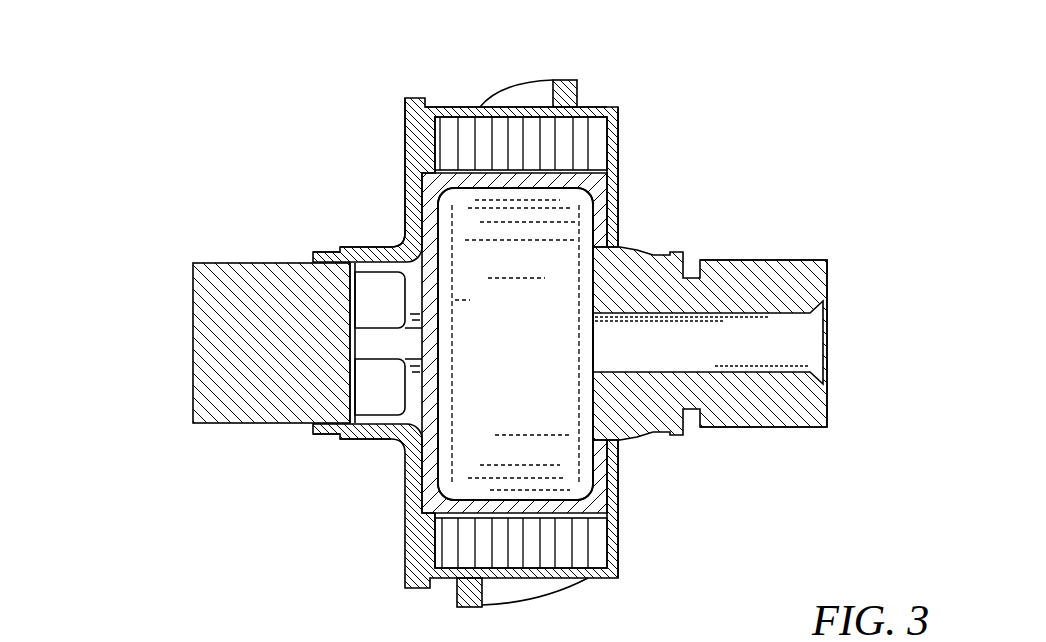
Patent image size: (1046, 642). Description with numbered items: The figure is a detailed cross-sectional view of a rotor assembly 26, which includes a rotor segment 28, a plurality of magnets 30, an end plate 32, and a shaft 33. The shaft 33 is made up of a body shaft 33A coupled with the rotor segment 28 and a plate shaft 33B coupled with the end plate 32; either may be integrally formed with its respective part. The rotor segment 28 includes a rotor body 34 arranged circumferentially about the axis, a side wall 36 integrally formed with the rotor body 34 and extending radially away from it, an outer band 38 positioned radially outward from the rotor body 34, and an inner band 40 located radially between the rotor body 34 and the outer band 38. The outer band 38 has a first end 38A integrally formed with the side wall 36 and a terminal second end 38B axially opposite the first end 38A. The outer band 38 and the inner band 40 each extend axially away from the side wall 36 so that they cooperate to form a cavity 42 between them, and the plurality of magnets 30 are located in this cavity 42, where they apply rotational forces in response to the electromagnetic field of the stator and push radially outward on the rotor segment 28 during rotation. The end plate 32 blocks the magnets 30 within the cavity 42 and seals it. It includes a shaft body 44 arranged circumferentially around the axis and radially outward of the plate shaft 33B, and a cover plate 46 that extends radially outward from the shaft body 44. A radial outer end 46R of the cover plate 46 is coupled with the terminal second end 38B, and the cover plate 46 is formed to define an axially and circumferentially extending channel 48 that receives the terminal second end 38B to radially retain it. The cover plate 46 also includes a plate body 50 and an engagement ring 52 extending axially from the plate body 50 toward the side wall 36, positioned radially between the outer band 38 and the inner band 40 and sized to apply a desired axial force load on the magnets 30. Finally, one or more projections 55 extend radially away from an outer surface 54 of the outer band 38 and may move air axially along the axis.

The rotor assembly 26 is at (115, 123).
The rotor segment 28 is at (502, 299).
The plurality of magnets 30 is at (553, 137).
The end plate 32 is at (327, 158).
The shaft 33 is at (486, 299).
The body shaft 33A is at (743, 258).
The plate shaft 33B is at (240, 263).
The rotor body 34 is at (642, 240).
The side wall 36 is at (623, 177).
The outer band 38 is at (499, 299).
The first end 38A is at (600, 107).
The terminal second end 38B is at (425, 100).
The inner band 40 is at (598, 485).
The cavity 42 is at (448, 143).
The shaft body 44 is at (328, 253).
The cover plate 46 is at (380, 220).
The radial outer end 46R is at (402, 117).
The channel 48 is at (423, 140).
The plate body 50 is at (413, 500).
The engagement ring 52 is at (430, 548).
The outer surface 54 is at (480, 107).
The projections 55 is at (547, 78).